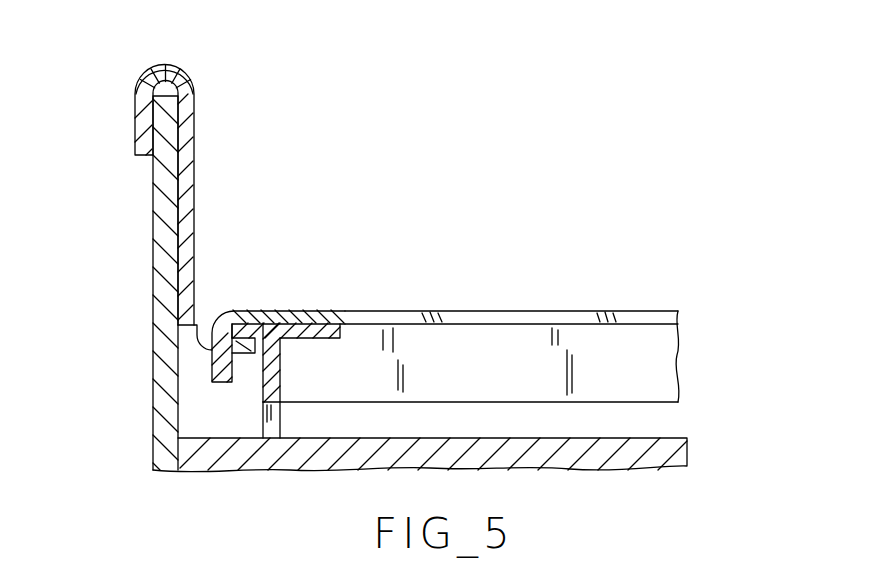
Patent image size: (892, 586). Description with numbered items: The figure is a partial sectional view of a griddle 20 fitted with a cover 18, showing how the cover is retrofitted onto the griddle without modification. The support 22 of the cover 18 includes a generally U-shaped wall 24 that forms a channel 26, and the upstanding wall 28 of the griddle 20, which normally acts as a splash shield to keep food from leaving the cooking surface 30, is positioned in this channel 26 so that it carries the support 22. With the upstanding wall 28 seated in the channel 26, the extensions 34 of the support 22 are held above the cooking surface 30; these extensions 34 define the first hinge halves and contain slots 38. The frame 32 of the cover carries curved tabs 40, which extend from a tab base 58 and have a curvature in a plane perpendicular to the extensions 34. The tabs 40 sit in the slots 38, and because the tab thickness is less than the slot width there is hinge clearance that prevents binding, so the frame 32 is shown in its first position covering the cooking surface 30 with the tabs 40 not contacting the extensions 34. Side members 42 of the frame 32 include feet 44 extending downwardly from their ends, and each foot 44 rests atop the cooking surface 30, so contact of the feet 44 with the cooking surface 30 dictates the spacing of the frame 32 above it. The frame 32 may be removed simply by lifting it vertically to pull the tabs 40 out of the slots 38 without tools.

The cover 18 is at (304, 294).
The griddle 20 is at (715, 442).
The support 22 is at (236, 181).
The U-shaped wall 24 is at (186, 140).
The channel 26 is at (160, 68).
The upstanding wall 28 is at (155, 222).
The cooking surface 30 is at (645, 438).
The frame 32 is at (677, 324).
The extensions 34 is at (248, 356).
The slots 38 is at (202, 333).
The tabs 40 is at (243, 310).
The side members 42 is at (270, 385).
The feet 44 is at (276, 420).
The tab base 58 is at (333, 311).